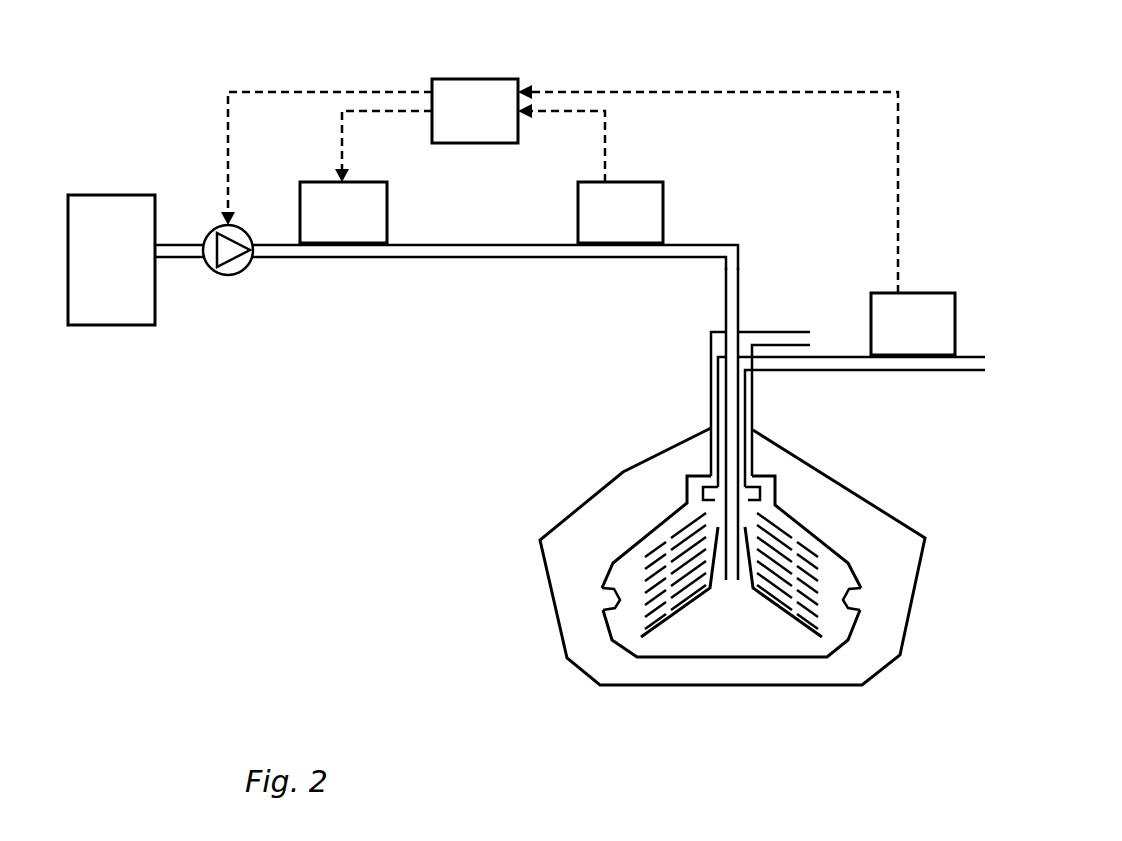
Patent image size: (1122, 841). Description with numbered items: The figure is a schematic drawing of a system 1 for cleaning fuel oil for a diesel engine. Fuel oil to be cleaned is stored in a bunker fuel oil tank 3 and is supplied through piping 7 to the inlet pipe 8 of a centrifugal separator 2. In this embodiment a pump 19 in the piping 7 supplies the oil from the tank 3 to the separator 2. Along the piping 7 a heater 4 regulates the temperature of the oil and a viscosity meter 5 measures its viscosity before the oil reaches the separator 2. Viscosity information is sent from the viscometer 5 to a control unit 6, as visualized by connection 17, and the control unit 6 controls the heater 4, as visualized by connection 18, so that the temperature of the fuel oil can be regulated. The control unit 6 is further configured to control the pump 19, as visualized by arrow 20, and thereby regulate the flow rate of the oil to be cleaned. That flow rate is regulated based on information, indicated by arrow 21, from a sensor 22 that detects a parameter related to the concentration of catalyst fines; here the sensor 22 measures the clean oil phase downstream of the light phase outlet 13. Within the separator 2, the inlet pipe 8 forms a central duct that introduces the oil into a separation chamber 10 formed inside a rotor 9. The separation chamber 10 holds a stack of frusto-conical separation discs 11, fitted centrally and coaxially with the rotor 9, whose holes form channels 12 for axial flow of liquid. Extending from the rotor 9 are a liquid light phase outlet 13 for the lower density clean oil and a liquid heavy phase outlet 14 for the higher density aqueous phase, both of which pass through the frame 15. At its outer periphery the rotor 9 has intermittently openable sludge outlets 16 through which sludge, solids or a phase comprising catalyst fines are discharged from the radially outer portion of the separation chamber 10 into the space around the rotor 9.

The system 1 is at (118, 84).
The centrifugal separator 2 is at (583, 470).
The bunker fuel oil tank 3 is at (130, 207).
The heater 4 is at (325, 190).
The viscosity meter 5 is at (650, 193).
The control unit 6 is at (487, 88).
The piping 7 is at (707, 247).
The inlet pipe 8 is at (732, 295).
The rotor 9 is at (820, 537).
The separation chamber 10 is at (822, 573).
The frusto-conical separation discs 11 is at (818, 623).
The channels 12 is at (672, 537).
The liquid light phase outlet 13 is at (808, 365).
The liquid heavy phase outlet 14 is at (813, 337).
The frame 15 is at (783, 442).
The sludge outlets 16 is at (590, 597).
The connection 17 is at (590, 110).
The connection 18 is at (393, 112).
The pump 19 is at (233, 277).
The arrow 20 is at (302, 92).
The arrow 21 is at (672, 90).
The sensor 22 is at (905, 307).